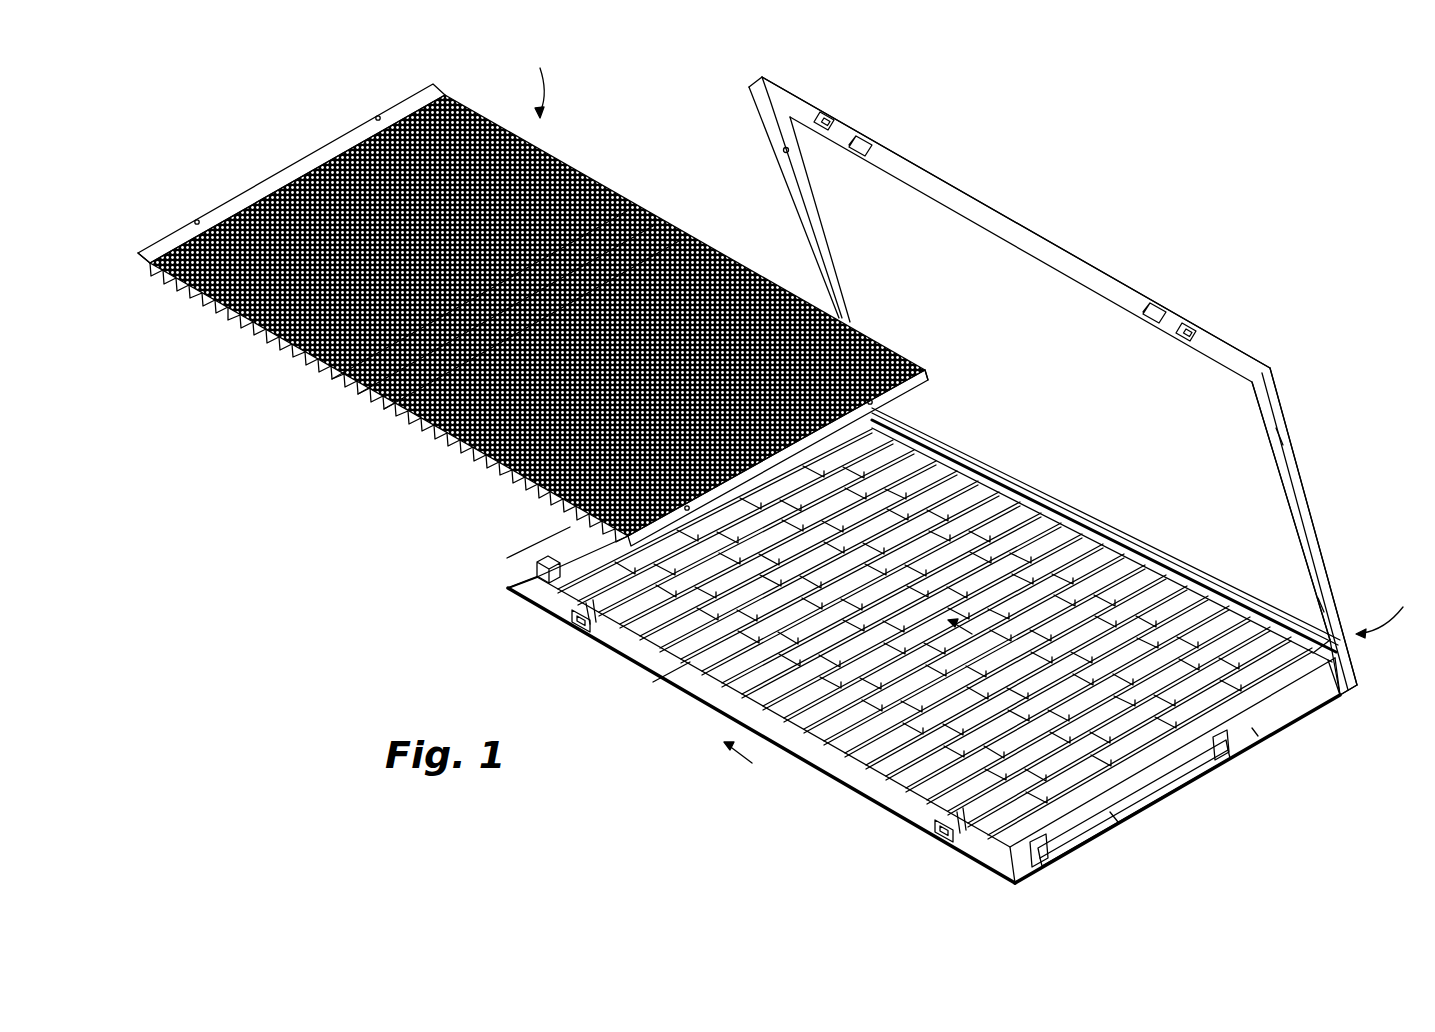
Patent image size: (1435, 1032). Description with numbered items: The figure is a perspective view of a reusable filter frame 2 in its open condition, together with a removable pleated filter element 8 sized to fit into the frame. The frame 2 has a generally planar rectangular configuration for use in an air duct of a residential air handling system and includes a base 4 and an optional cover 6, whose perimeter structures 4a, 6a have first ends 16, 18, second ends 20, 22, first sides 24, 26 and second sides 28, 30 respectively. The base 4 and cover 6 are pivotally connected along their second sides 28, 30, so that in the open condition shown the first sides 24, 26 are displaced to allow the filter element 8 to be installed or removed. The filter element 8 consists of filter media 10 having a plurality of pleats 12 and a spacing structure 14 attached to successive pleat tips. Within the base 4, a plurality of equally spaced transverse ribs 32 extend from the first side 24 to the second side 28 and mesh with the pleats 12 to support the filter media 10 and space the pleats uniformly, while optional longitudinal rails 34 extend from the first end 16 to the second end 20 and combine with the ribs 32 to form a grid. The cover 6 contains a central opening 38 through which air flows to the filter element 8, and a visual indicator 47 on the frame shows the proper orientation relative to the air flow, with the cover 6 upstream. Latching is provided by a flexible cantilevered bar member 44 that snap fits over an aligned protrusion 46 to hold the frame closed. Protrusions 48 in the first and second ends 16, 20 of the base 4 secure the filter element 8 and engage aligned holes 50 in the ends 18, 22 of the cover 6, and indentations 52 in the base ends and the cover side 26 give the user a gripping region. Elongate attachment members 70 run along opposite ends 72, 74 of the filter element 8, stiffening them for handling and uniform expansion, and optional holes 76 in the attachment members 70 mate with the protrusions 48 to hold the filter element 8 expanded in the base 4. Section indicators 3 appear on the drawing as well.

The reusable filter frame 2 is at (948, 616).
The section line 3- 3 is at (857, 704).
The base 4 is at (863, 800).
The perimeter structure 4a is at (842, 781).
The cover 6 is at (1278, 388).
The perimeter structure 6a is at (826, 255).
The pleated filter element 8 is at (537, 81).
The filter media 10 is at (232, 316).
The pleats 12 is at (389, 418).
The spacing structure 14 is at (572, 152).
The first end 16 is at (508, 588).
The first end 18 is at (773, 208).
The second end 20 is at (1150, 828).
The second end 22 is at (1318, 527).
The first side 24 is at (702, 705).
The first side 26 is at (1088, 260).
The second side 28 is at (1328, 703).
The second side 30 is at (1358, 676).
The transverse ribs 32 is at (593, 625).
The longitudinal rails 34 is at (1165, 780).
The central opening 38 is at (1034, 392).
The flexible cantilevered bar member 44 is at (565, 622).
The protrusion 46 is at (833, 117).
The visual indicator 47 is at (1010, 218).
The protrusions 48 is at (568, 529).
The hole 50 is at (790, 153).
The indentations 52 is at (874, 147).
The elongate attachment members 70 is at (294, 166).
The end 72 is at (146, 264).
The end 74 is at (922, 371).
The holes 76 is at (377, 117).